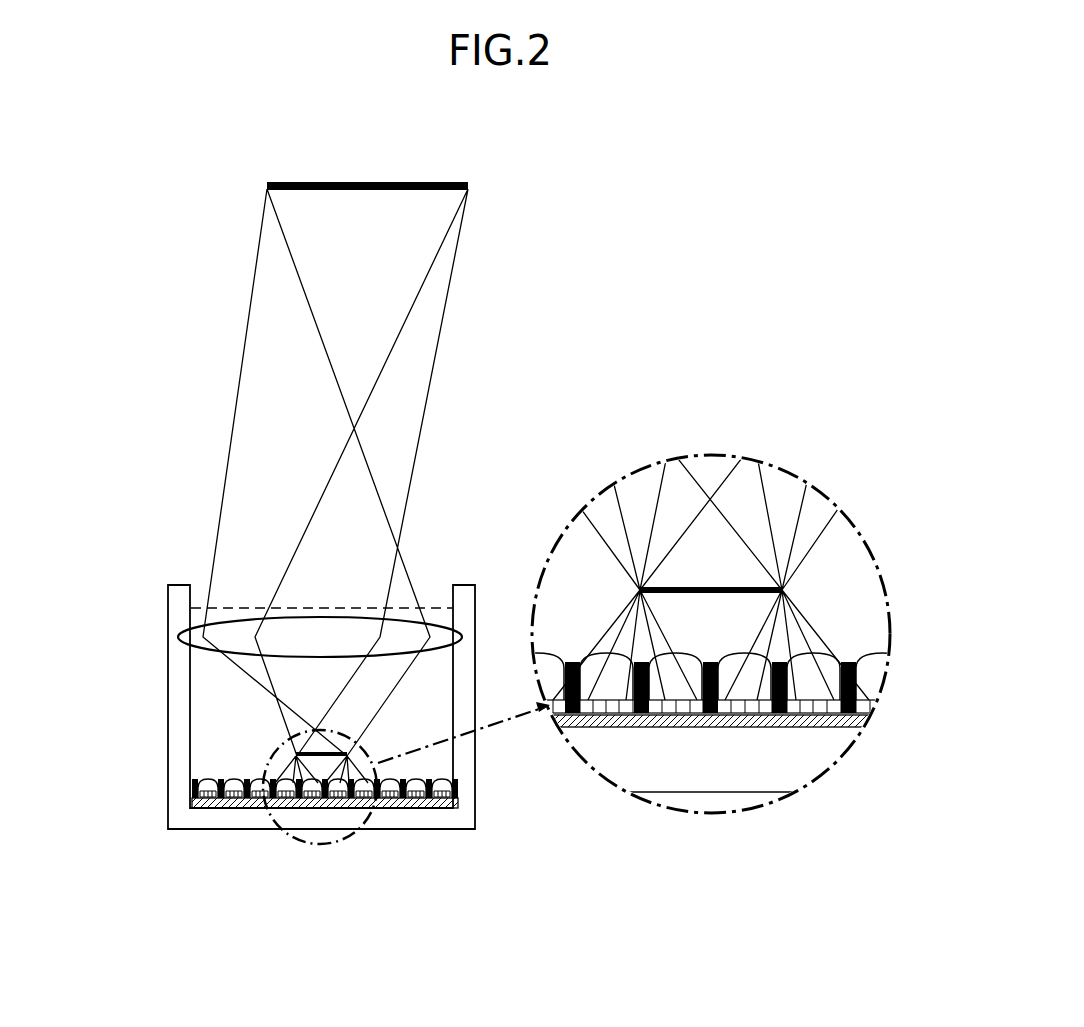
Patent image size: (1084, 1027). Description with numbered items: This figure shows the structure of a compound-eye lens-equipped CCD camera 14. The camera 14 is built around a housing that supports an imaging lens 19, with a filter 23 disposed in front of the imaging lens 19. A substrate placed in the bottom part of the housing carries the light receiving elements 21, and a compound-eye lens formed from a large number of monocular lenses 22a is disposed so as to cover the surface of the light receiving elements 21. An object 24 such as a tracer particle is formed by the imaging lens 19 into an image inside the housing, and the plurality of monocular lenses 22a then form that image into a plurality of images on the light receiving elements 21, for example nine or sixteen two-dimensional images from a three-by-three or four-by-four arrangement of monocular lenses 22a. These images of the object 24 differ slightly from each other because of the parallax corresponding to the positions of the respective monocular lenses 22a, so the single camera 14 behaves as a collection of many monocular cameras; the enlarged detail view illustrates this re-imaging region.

The CCD camera 14 is at (488, 806).
The imaging lens 19 is at (325, 622).
The light receiving elements 21 is at (818, 708).
The monocular lenses 22a is at (805, 655).
The filter 23 is at (243, 607).
The object 24 is at (335, 448).